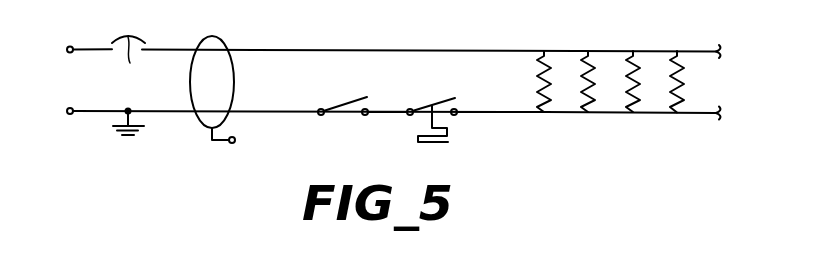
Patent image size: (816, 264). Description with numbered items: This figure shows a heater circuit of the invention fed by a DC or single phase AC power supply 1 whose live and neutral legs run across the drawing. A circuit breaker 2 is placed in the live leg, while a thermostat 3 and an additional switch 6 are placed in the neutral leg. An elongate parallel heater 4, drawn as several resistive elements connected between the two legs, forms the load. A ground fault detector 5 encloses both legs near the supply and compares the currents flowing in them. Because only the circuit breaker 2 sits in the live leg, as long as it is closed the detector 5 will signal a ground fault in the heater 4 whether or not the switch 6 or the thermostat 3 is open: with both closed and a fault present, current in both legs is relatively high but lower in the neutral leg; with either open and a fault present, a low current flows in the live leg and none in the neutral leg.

The power supply 1 is at (64, 92).
The circuit breaker 2 is at (128, 65).
The thermostat 3 is at (427, 102).
The elongate parallel heater 4 is at (672, 87).
The ground fault detector 5 is at (234, 86).
The additional switch 6 is at (338, 103).